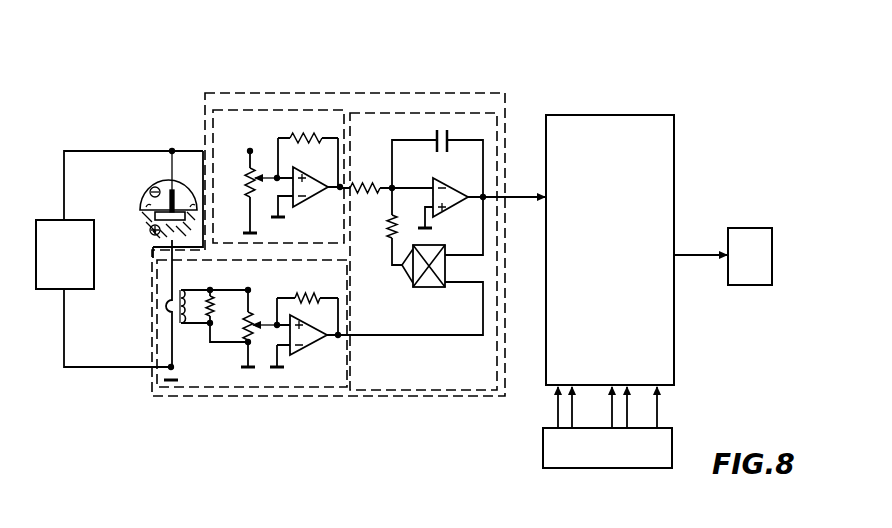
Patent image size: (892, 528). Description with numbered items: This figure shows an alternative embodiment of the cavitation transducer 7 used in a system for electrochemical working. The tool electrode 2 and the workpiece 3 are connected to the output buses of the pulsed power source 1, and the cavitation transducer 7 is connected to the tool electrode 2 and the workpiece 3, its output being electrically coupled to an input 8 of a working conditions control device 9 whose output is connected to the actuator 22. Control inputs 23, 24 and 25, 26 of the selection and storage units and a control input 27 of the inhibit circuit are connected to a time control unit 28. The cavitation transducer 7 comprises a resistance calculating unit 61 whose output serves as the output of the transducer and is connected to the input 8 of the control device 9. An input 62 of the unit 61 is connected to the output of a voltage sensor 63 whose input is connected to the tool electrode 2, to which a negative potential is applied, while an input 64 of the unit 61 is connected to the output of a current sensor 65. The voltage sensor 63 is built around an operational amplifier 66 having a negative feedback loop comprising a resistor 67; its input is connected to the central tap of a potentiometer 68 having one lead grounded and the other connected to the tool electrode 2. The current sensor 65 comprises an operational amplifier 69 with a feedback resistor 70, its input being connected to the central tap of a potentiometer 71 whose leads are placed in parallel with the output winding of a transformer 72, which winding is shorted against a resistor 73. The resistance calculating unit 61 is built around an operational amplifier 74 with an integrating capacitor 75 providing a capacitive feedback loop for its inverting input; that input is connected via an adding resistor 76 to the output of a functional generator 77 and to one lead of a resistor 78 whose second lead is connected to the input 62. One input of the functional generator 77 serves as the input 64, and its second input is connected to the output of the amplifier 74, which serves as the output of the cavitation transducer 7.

The pulsed power source 1 is at (119, 259).
The tool electrode 2 is at (174, 190).
The workpiece 3 is at (141, 222).
The cavitation transducer 7 is at (364, 93).
The input of working conditions control device 8 is at (543, 202).
The working conditions control device 9 is at (556, 280).
The actuator 22 is at (723, 256).
The control input 23 is at (555, 390).
The control input 24 is at (570, 398).
The control input 25 is at (610, 390).
The control input 26 is at (629, 392).
The control input of inhibit circuit 27 is at (660, 392).
The time control unit 28 is at (607, 448).
The resistance calculating unit 61 is at (381, 399).
The input of resistance calculating unit 62 is at (343, 185).
The voltage sensor 63 is at (233, 108).
The input of resistance calculating unit 64 is at (343, 334).
The current sensor 65 is at (226, 246).
The operational amplifier 66 is at (316, 200).
The resistor 67 is at (292, 137).
The potentiometer 68 is at (247, 167).
The operational amplifier 69 is at (310, 344).
The resistor 70 is at (306, 297).
The potentiometer 71 is at (246, 324).
The transformer 72 is at (184, 289).
The resistor 73 is at (215, 303).
The operational amplifier 74 is at (447, 190).
The integrating capacitor 75 is at (449, 138).
The adding resistor 76 is at (387, 232).
The functional generator 77 is at (437, 254).
The resistor 78 is at (365, 193).